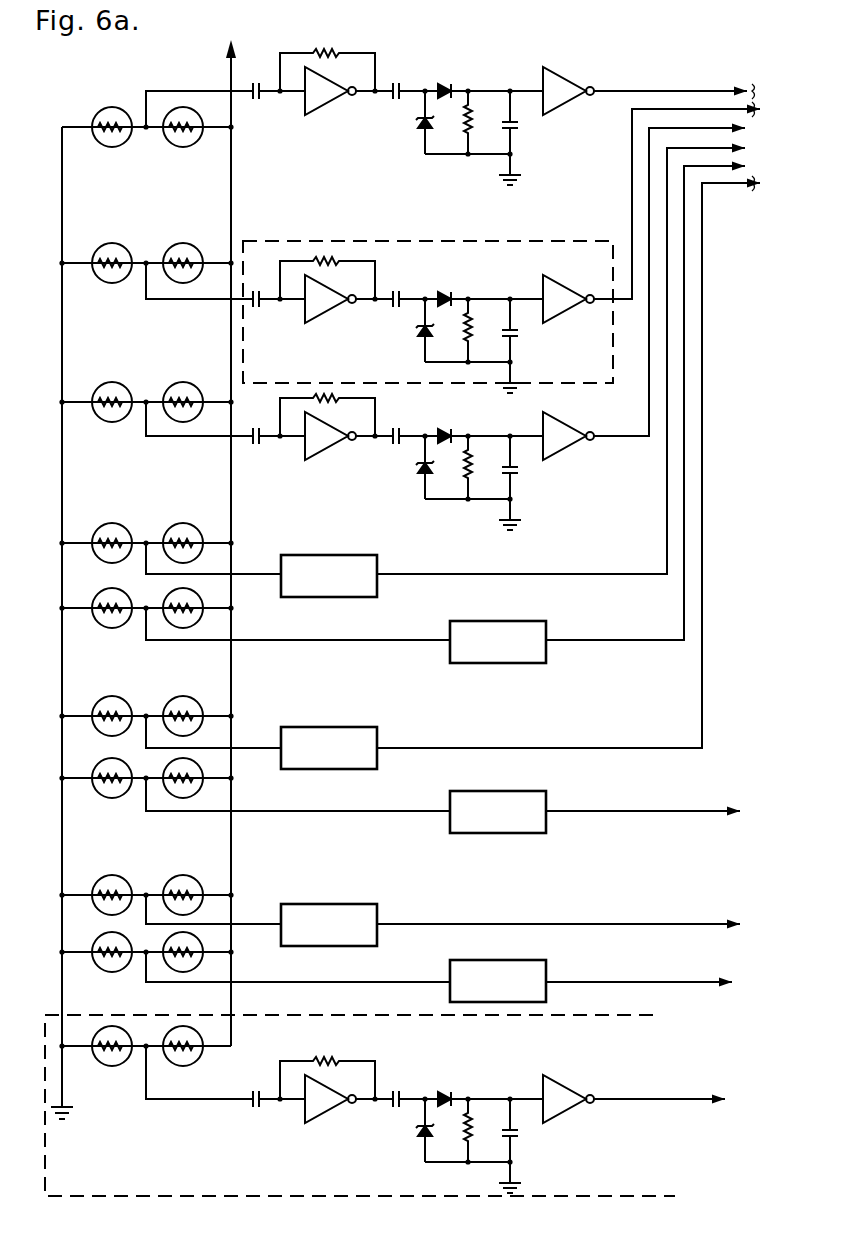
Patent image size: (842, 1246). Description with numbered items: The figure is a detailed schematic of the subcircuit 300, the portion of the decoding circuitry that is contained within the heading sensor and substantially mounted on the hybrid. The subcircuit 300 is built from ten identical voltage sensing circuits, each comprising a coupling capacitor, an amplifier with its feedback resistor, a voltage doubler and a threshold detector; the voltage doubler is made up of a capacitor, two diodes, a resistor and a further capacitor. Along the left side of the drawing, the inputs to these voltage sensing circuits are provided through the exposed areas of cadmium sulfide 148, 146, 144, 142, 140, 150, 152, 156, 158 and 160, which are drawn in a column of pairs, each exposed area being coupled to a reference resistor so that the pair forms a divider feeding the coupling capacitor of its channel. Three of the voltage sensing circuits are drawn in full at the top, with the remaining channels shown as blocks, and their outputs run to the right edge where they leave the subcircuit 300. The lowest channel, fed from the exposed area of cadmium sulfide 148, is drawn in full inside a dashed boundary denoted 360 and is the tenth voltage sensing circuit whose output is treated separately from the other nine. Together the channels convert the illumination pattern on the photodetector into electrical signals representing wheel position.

The exposed area of cadmium sulfide 140 is at (202, 686).
The exposed area of cadmium sulfide 142 is at (181, 798).
The exposed area of cadmium sulfide 144 is at (186, 876).
The exposed area of cadmium sulfide 146 is at (178, 972).
The exposed area of cadmium sulfide 148 is at (183, 1066).
The exposed area of cadmium sulfide 150 is at (180, 628).
The exposed area of cadmium sulfide 152 is at (186, 523).
The exposed area of cadmium sulfide 156 is at (186, 382).
The exposed area of cadmium sulfide 158 is at (186, 243).
The exposed area of cadmium sulfide 160 is at (186, 146).
The subcircuit 300 is at (616, 52).
The channel block 360 is at (632, 1196).